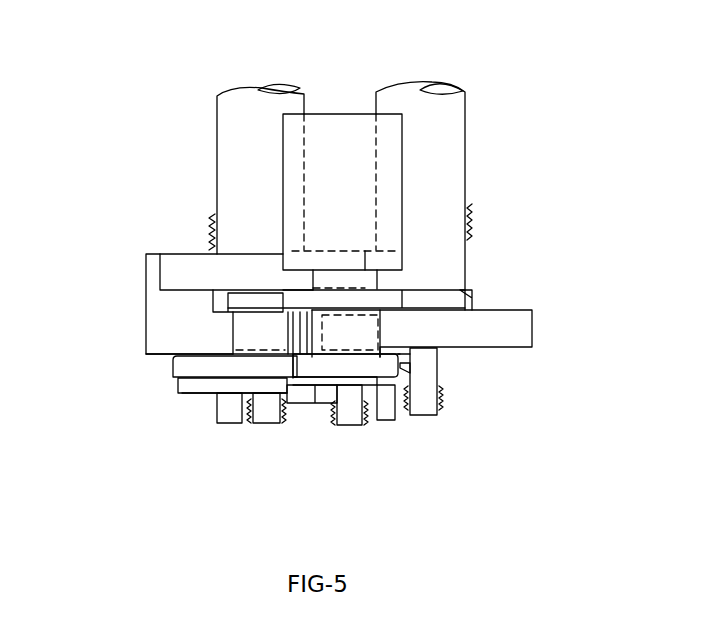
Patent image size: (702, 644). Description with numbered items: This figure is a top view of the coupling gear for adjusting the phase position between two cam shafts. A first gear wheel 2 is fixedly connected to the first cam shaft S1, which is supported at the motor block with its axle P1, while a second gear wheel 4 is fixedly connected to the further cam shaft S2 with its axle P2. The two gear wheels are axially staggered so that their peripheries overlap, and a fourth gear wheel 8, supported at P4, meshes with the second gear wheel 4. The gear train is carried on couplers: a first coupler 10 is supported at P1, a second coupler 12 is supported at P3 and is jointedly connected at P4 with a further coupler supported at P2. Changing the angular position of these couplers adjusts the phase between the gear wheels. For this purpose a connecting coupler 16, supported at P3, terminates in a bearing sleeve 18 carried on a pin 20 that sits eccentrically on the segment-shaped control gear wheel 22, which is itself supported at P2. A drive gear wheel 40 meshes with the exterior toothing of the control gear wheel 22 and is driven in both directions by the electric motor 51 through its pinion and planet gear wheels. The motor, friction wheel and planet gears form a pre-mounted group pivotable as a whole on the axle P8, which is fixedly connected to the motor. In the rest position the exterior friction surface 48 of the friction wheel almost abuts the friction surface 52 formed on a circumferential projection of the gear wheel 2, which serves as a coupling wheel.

The first cam shaft S1 is at (450, 132).
The cam shaft S2 is at (228, 115).
The electric motor 51 is at (330, 133).
The second gear wheel 4 is at (197, 265).
The fourth gear wheel 8 is at (170, 306).
The exterior friction surface 48 is at (472, 288).
The friction surface 52 is at (473, 298).
The first gear wheel 2 is at (522, 327).
The second coupler 12 is at (320, 400).
The connecting coupler 16 is at (305, 387).
The control gear wheel 22 is at (172, 370).
The bearing sleeve 18 is at (177, 385).
The pin 20 is at (203, 390).
The drive gear wheel 40 is at (387, 367).
The first coupler 10 is at (402, 365).
The axle P1 is at (427, 370).
The axle P2 is at (260, 423).
The support point P3 is at (380, 420).
The joint P4 is at (218, 423).
The axle P8 is at (352, 418).